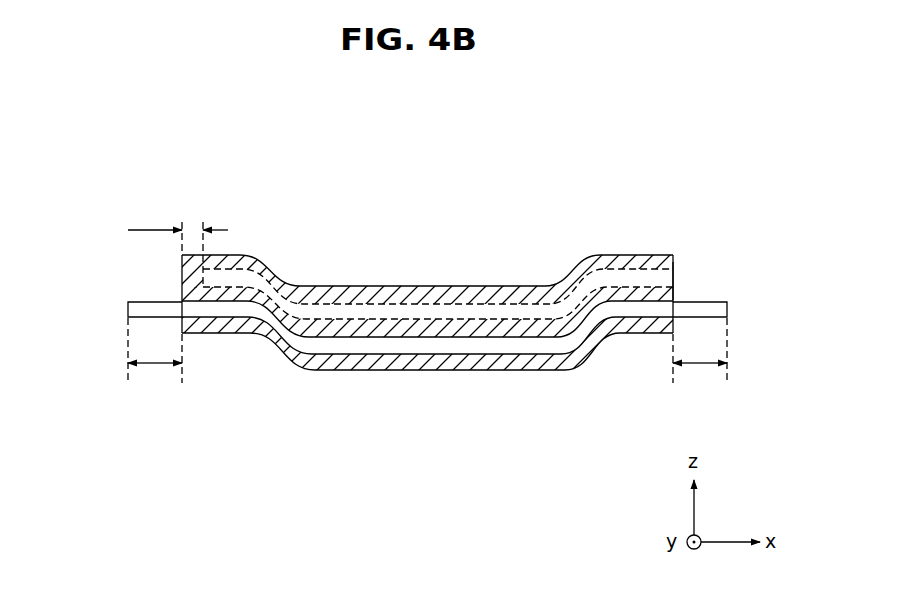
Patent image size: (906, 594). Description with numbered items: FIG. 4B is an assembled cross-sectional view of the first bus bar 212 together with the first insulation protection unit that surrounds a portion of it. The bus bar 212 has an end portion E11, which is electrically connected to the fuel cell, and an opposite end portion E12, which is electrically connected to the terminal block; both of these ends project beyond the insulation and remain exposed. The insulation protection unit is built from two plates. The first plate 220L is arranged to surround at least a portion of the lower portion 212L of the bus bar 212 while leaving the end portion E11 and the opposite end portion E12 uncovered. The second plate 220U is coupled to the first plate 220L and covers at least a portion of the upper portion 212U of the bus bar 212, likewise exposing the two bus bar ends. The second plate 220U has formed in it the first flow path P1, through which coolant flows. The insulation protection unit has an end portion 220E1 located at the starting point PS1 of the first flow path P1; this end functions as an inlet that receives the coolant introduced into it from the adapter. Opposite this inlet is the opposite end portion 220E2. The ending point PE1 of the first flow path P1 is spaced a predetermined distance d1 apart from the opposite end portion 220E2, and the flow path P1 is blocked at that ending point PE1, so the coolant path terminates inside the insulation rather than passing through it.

The second plate 220U is at (239, 255).
The first plate 220L is at (205, 322).
The end portion of the first insulation protection unit 220E1 is at (673, 262).
The opposite end portion of the first insulation protection unit 220E2 is at (182, 280).
The first bus bar 212 is at (140, 308).
The upper portion of the first bus bar 212U is at (491, 339).
The lower portion of the first bus bar 212L is at (466, 357).
The first flow path P1 is at (413, 310).
The ending point of the first flow path PE1 is at (208, 284).
The starting point of the first flow path PS1 is at (673, 277).
The predetermined distance d1 is at (178, 230).
The end portion of the first bus bar E11 is at (155, 356).
The opposite end portion of the first bus bar E12 is at (700, 356).